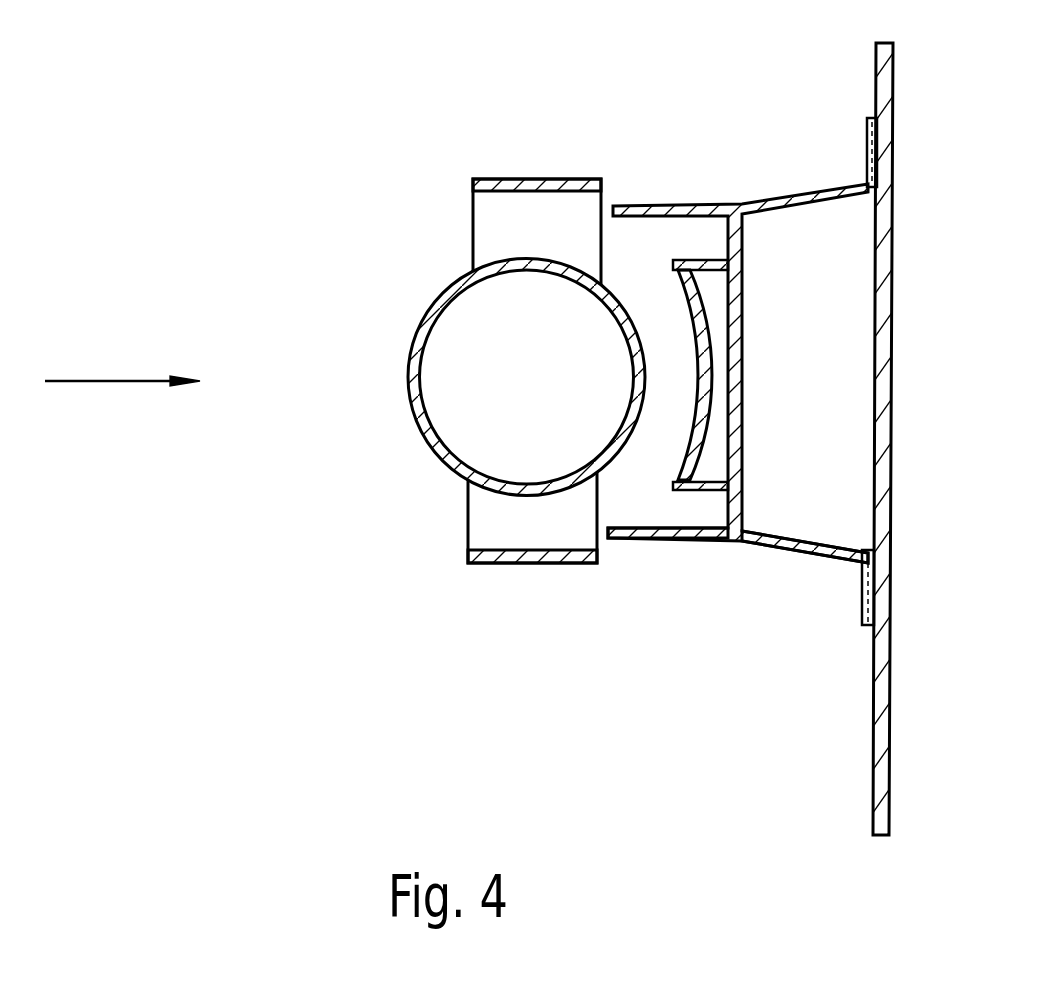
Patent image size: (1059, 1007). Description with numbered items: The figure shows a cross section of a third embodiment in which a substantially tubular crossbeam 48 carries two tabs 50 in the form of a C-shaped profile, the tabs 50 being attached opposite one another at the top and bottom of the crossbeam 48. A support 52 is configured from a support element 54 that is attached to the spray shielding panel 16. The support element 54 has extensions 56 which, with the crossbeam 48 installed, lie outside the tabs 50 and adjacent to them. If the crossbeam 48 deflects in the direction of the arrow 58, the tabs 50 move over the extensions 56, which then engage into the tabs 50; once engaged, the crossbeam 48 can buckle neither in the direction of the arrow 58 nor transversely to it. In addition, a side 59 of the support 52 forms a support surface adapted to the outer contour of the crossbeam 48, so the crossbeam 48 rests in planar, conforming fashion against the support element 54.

The spray shielding panel 16 is at (882, 775).
The tubular crossbeam 48 is at (413, 407).
The tabs 50 is at (485, 525).
The support 52 is at (710, 458).
The support element 54 is at (810, 553).
The extensions 56 is at (668, 538).
The arrow 58 is at (108, 381).
The side of support 59 is at (697, 388).